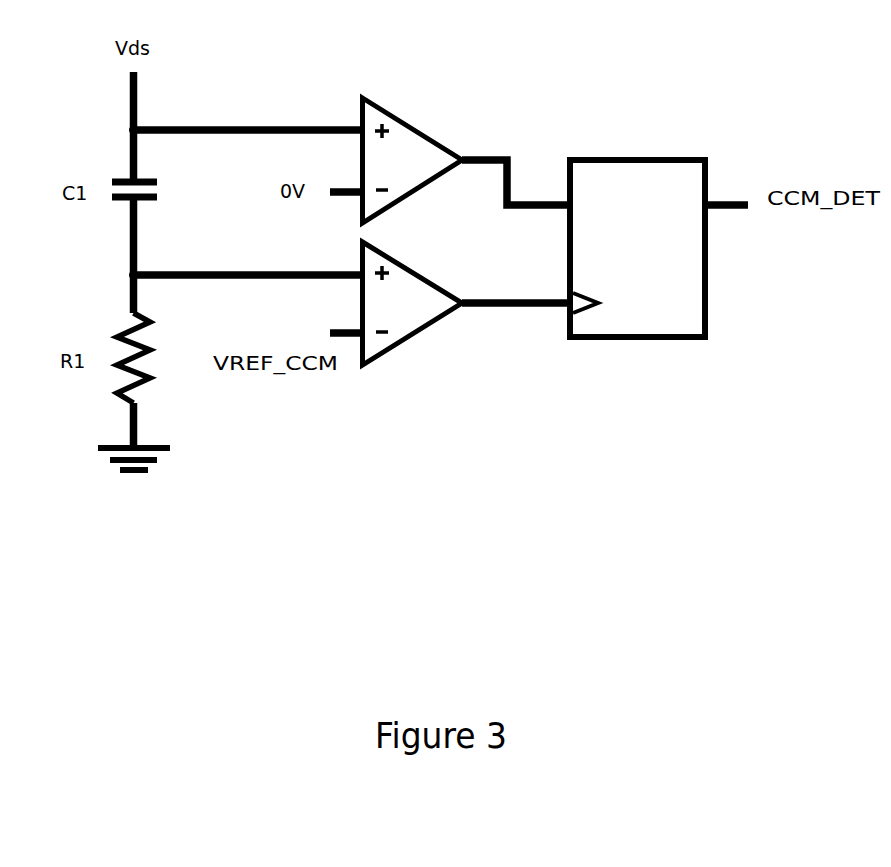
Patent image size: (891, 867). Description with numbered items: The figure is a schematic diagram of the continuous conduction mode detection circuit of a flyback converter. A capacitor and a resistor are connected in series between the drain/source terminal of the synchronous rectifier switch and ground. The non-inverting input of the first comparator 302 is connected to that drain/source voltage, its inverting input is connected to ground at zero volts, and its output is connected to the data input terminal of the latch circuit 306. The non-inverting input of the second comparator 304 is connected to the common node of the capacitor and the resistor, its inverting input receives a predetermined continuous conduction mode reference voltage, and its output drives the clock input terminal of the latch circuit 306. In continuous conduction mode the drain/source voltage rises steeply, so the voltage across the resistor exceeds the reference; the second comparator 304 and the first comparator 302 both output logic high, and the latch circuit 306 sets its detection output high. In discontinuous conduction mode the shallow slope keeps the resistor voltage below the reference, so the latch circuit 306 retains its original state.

The first comparator 302 is at (417, 174).
The second comparator 304 is at (417, 316).
The latch circuit 306 is at (660, 262).